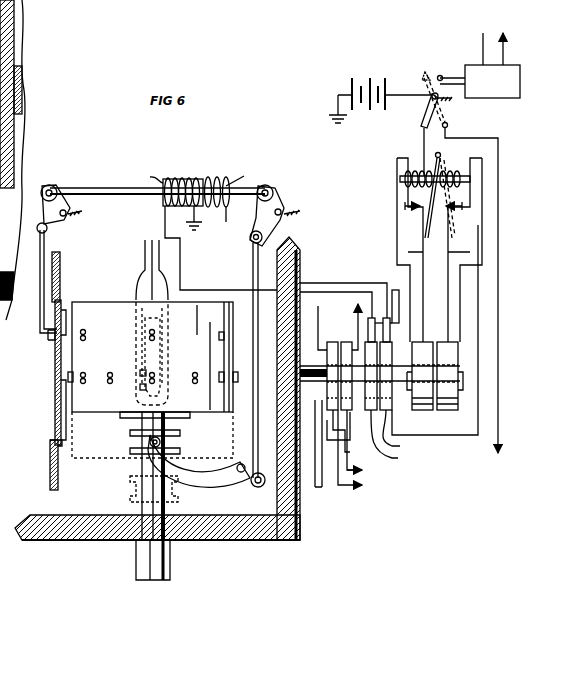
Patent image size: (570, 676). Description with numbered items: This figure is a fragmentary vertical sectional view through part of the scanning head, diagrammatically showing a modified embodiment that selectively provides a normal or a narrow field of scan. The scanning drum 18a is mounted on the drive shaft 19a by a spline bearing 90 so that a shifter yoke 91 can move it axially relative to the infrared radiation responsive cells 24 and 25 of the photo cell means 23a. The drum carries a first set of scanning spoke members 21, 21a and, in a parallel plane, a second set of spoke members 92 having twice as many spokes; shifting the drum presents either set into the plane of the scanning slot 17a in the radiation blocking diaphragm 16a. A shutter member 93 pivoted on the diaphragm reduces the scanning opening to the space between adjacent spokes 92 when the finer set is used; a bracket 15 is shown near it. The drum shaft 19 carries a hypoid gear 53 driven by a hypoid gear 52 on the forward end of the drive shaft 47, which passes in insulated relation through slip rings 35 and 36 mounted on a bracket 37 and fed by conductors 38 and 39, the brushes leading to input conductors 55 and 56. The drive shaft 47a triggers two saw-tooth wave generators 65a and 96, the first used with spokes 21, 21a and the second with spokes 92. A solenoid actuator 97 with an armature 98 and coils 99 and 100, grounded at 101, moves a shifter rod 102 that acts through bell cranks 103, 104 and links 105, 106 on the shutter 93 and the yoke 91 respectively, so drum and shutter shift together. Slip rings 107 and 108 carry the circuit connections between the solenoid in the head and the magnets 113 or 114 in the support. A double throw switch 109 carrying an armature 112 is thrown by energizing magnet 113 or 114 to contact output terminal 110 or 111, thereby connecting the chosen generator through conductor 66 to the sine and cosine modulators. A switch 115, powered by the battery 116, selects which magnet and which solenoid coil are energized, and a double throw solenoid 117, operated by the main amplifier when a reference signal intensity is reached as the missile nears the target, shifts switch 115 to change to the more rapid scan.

The bracket 15 is at (50, 465).
The radiation blocking diaphragm 16a is at (54, 417).
The scanning slot 17a is at (53, 373).
The scanning drum 18a is at (86, 306).
The shaft 19 is at (172, 575).
The drive shaft 19a is at (135, 487).
The scanning spoke member 21 is at (86, 340).
The scanning spoke member 21a is at (86, 334).
The photo cell means 23a is at (138, 292).
The infrared radiation responsive cell 24 is at (166, 378).
The infrared radiation responsive cell 25 is at (139, 374).
The slip ring 35 is at (332, 342).
The slip ring 36 is at (346, 369).
The bracket 37 is at (315, 490).
The conductor 38 is at (338, 321).
The conductor 39 is at (338, 292).
The drive shaft 47 is at (20, 101).
The drive shaft 47a is at (458, 360).
The hypoid gear 52 is at (16, 42).
The second hypoid gear 53 is at (68, 544).
The electrical input conductor 55 is at (361, 450).
The electrical input conductor 56 is at (351, 452).
The saw-tooth wave generator 65a is at (446, 418).
The conductor 66 is at (498, 325).
The spline bearing 90 is at (168, 444).
The shifter yoke 91 is at (208, 494).
The second set of spoke members 92 is at (86, 384).
The shutter member 93 is at (54, 356).
The saw-tooth wave generator 96 is at (424, 416).
The solenoid actuator 97 is at (203, 168).
The armature 98 is at (145, 177).
The solenoid coil 99 is at (243, 177).
The solenoid coil 100 is at (183, 179).
The ground 101 is at (195, 234).
The shifter rod 102 is at (100, 200).
The bell crank 103 is at (64, 221).
The bell crank 104 is at (271, 205).
The link 105 is at (40, 262).
The link 106 is at (253, 278).
The slip ring 107 is at (397, 438).
The slip ring 108 is at (403, 431).
The double throw switch 109 is at (439, 248).
The output terminal 110 is at (458, 200).
The output terminal 111 is at (409, 200).
The armature 112 is at (470, 180).
The magnet 113 is at (414, 172).
The magnet 114 is at (450, 172).
The switch 115 is at (422, 118).
The battery 116 is at (360, 78).
The double throw solenoid 117 is at (520, 82).